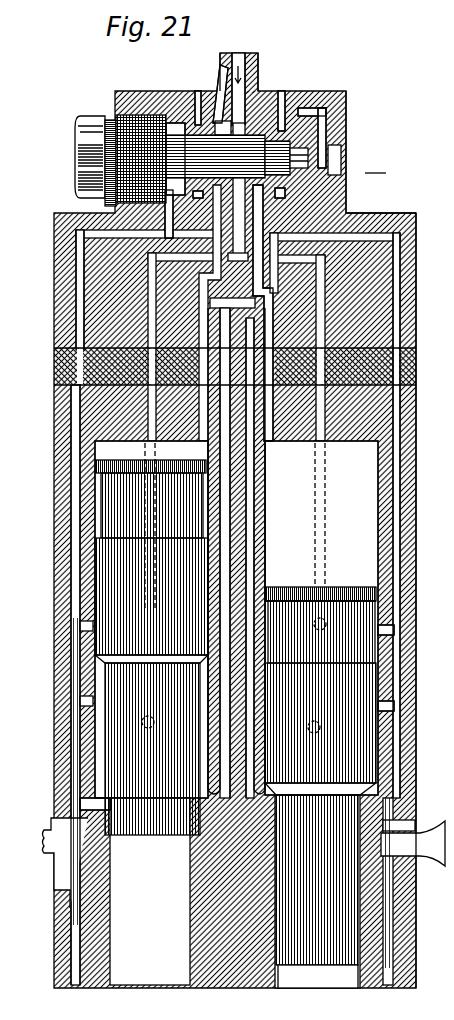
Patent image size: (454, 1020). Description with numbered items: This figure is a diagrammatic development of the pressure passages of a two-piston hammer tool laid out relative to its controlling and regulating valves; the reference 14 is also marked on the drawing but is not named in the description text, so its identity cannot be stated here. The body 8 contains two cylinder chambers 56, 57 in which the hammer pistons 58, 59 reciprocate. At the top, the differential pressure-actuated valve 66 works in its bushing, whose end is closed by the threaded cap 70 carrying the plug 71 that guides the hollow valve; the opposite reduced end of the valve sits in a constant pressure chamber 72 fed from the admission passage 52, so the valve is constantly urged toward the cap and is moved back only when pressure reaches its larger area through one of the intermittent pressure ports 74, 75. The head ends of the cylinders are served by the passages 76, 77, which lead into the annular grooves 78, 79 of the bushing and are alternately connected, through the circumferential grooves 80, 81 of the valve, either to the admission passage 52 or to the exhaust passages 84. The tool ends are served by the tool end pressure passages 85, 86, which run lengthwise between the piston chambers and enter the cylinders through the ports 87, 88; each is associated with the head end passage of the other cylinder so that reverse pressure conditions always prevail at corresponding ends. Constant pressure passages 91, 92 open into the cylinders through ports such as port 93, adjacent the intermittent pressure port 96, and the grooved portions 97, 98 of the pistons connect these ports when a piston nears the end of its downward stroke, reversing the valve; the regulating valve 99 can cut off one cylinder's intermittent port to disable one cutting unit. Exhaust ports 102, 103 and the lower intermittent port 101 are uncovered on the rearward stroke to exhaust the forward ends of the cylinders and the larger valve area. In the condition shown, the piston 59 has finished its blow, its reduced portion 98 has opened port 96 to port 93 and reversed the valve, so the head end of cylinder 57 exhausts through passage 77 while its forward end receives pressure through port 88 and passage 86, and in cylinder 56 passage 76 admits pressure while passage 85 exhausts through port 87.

The body 8 is at (400, 492).
The shaft 14 is at (62, 152).
The admission passage 52 is at (250, 58).
The cylinder chamber 56 is at (88, 760).
The cylinder chamber 57 is at (385, 790).
The piston 58 is at (151, 600).
The piston 59 is at (350, 745).
The differential pressure-actuated valve 66 is at (333, 148).
The threaded cap 70 is at (100, 112).
The plug 71 is at (172, 140).
The constant pressure chamber 72 is at (300, 135).
The intermittent pressure port 74 is at (68, 587).
The intermittent pressure port 75 is at (389, 547).
The passage 76 is at (160, 205).
The passage 77 is at (253, 202).
The annular groove 78 is at (182, 112).
The annular groove 79 is at (305, 100).
The circumferential groove 80 is at (212, 57).
The circumferential groove 81 is at (315, 98).
The exhaust passages 84 is at (273, 88).
The tool end pressure passage 85 is at (212, 478).
The tool end pressure passage 86 is at (238, 500).
The port 87 is at (190, 812).
The port 88 is at (250, 786).
The constant pressure passage 91 is at (130, 432).
The constant pressure passage 92 is at (316, 418).
The port 93 is at (322, 605).
The port 96 is at (382, 622).
The grooved portion 97 is at (151, 499).
The grooved portion 98 is at (365, 600).
The regulating valve 99 is at (405, 355).
The port 101 is at (380, 697).
The exhaust ports 102 is at (137, 712).
The exhaust ports 103 is at (302, 716).